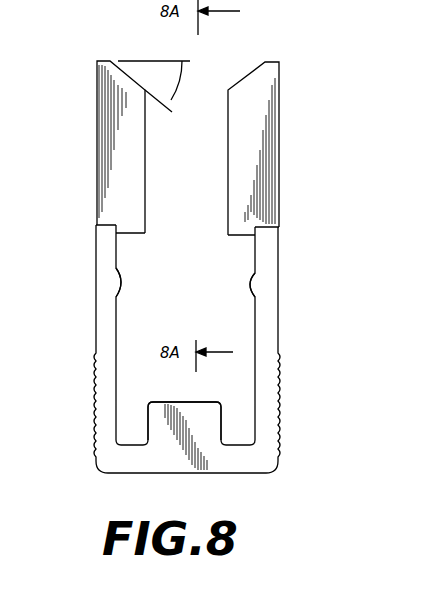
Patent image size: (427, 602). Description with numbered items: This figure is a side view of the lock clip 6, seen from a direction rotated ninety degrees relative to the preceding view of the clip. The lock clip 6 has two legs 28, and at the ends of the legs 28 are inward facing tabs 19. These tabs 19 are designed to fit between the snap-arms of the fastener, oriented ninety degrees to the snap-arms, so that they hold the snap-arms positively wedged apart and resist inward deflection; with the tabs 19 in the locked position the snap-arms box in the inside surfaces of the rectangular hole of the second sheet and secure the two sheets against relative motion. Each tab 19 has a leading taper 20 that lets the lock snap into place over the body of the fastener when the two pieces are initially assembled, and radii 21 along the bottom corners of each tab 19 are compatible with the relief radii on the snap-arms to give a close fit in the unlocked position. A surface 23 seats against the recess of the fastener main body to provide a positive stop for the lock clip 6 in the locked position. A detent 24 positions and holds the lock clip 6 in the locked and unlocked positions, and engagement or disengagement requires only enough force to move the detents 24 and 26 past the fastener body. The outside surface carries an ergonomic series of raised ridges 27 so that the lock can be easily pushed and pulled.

The lock clip 6 is at (177, 267).
The tabs 19 is at (228, 180).
The leading taper 20 is at (165, 86).
The radii 21 is at (237, 217).
The surface 23 is at (168, 402).
The detent 24 is at (120, 295).
The detent 26 is at (252, 273).
The raised ridges 27 is at (277, 442).
The legs 28 is at (94, 298).